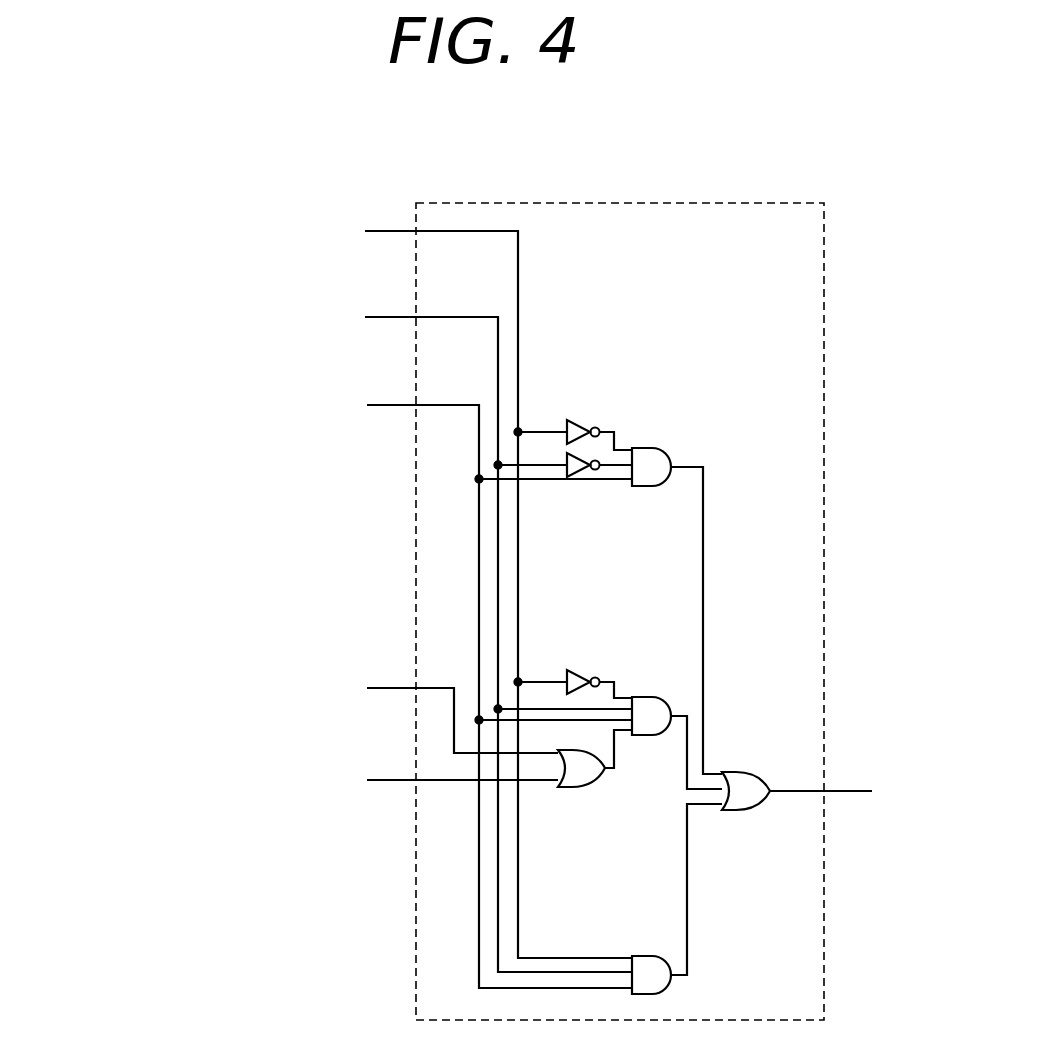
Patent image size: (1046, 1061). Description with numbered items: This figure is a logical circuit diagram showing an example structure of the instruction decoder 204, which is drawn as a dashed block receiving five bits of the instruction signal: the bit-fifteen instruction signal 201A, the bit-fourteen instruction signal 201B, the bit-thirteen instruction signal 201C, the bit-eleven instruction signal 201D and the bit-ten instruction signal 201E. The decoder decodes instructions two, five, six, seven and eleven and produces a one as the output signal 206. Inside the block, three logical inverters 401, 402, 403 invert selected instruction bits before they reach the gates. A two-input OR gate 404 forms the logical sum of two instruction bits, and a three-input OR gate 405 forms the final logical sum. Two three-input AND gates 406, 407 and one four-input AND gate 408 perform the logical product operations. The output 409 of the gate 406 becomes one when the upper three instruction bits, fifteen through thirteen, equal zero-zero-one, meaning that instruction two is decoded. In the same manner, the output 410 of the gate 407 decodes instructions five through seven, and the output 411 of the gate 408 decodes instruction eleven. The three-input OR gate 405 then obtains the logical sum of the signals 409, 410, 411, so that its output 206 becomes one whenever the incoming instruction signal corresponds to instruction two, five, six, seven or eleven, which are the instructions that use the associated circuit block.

The instruction signal [15] 201A is at (160, 221).
The instruction signal [14] 201B is at (160, 308).
The instruction signal [13] 201C is at (160, 396).
The instruction signal [11] 201D is at (160, 681).
The instruction signal [10] 201E is at (160, 771).
The instruction decoder 204 is at (826, 270).
The output signal 206 is at (850, 790).
The inverter 401 is at (576, 418).
The inverter 402 is at (578, 480).
The inverter 403 is at (576, 668).
The two-input OR gate 404 is at (567, 790).
The three-input OR gate 405 is at (740, 772).
The three-input AND gate 406 is at (650, 446).
The three-input AND gate 407 is at (648, 952).
The four-input AND gate 408 is at (650, 696).
The output of gate 406 409 is at (706, 552).
The output of gate 407 410 is at (690, 890).
The output of gate 408 411 is at (686, 753).